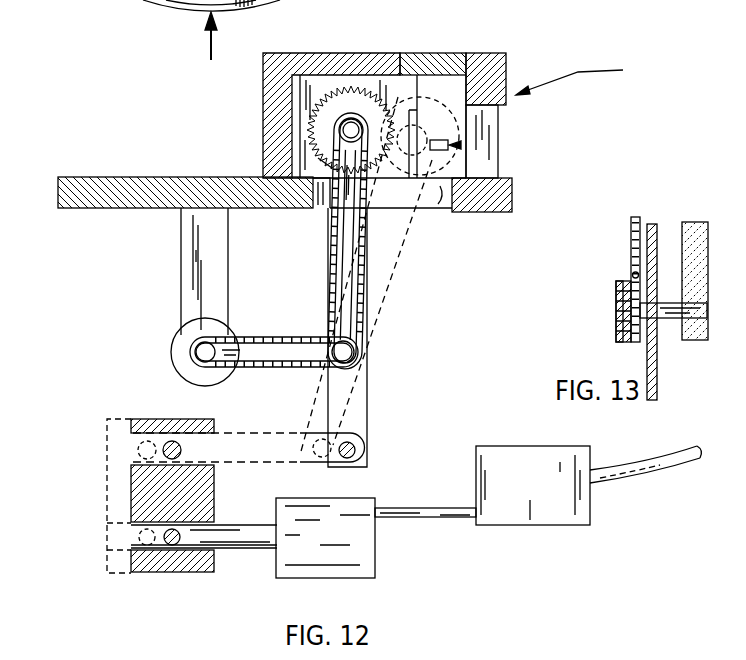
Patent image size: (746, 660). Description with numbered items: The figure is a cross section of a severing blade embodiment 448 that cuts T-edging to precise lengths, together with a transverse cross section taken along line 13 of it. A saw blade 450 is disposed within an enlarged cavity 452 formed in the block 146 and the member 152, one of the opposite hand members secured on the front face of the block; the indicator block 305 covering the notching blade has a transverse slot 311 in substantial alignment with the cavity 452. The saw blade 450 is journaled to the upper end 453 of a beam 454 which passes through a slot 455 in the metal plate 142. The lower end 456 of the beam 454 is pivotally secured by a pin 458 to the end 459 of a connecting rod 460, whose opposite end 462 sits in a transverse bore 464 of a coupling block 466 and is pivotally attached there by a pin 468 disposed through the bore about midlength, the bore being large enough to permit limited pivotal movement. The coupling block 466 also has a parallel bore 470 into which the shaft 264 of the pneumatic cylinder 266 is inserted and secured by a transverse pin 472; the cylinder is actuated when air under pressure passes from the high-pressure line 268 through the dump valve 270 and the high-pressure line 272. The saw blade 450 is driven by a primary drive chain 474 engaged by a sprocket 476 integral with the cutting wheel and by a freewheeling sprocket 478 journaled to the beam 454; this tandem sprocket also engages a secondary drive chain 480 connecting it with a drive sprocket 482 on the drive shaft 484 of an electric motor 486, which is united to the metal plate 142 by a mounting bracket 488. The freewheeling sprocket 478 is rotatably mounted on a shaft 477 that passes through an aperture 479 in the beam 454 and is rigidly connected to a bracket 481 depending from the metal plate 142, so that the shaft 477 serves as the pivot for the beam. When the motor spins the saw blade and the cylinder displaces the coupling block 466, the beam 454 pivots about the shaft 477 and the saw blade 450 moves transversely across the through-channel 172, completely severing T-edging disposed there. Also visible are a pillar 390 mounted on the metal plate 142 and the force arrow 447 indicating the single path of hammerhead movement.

In FIG. 12, the pillar 390 is at (173, 9).
In FIG. 12, the force arrow 447 is at (172, 36).
In FIG. 12, the block 146 is at (294, 115).
In FIG. 12, the member 152 is at (434, 37).
In FIG. 12, the indicator block 305 is at (513, 60).
In FIG. 12, the severing blade embodiment 448 is at (590, 77).
In FIG. 12, the transverse slot 311 is at (522, 140).
In FIG. 12, the through-channel 172 is at (479, 126).
In FIG. 12, the metal plate 142 is at (332, 150).
In FIG. 12, the saw blade 450 is at (351, 95).
In FIG. 12, the enlarged cavity 452 is at (295, 126).
In FIG. 12, the sprocket 476 is at (284, 135).
In FIG. 12, the upper end 453 is at (268, 163).
In FIG. 12, the primary drive chain 474 is at (316, 241).
In FIG. 13, the primary drive chain 474 is at (660, 259).
In FIG. 12, the beam 454 is at (373, 276).
In FIG. 13, the beam 454 is at (678, 328).
In FIG. 12, the slot 455 is at (472, 222).
In FIG. 12, the line 13— 13 is at (315, 354).
In FIG. 12, the mounting bracket 488 is at (161, 271).
In FIG. 12, the electric motor 486 is at (167, 343).
In FIG. 12, the secondary drive chain 480 is at (274, 333).
In FIG. 13, the secondary drive chain 480 is at (596, 297).
In FIG. 12, the drive shaft 484 is at (160, 356).
In FIG. 12, the drive sprocket 482 is at (264, 354).
In FIG. 12, the freewheeling sprocket 478 is at (384, 354).
In FIG. 13, the freewheeling sprocket 478 is at (590, 311).
In FIG. 12, the lower end 456 is at (375, 322).
In FIG. 12, the transverse bore 464 is at (162, 403).
In FIG. 12, the opposite end 462 is at (187, 426).
In FIG. 12, the pin 468 is at (108, 455).
In FIG. 12, the coupling block 466 is at (134, 494).
In FIG. 12, the parallel bore 470 is at (150, 521).
In FIG. 12, the transverse pin 472 is at (175, 575).
In FIG. 12, the shaft 264 is at (204, 564).
In FIG. 12, the connecting rod 460 is at (249, 471).
In FIG. 12, the pin 458 is at (388, 453).
In FIG. 12, the end 459 is at (329, 470).
In FIG. 12, the pneumatic cylinder 266 is at (338, 559).
In FIG. 12, the high-pressure line 272 is at (425, 491).
In FIG. 12, the dump valve 270 is at (546, 486).
In FIG. 12, the high-pressure line 268 is at (645, 487).
In FIG. 13, the bracket 481 is at (695, 247).
In FIG. 13, the aperture 479 is at (608, 252).
In FIG. 13, the shaft 477 is at (674, 343).